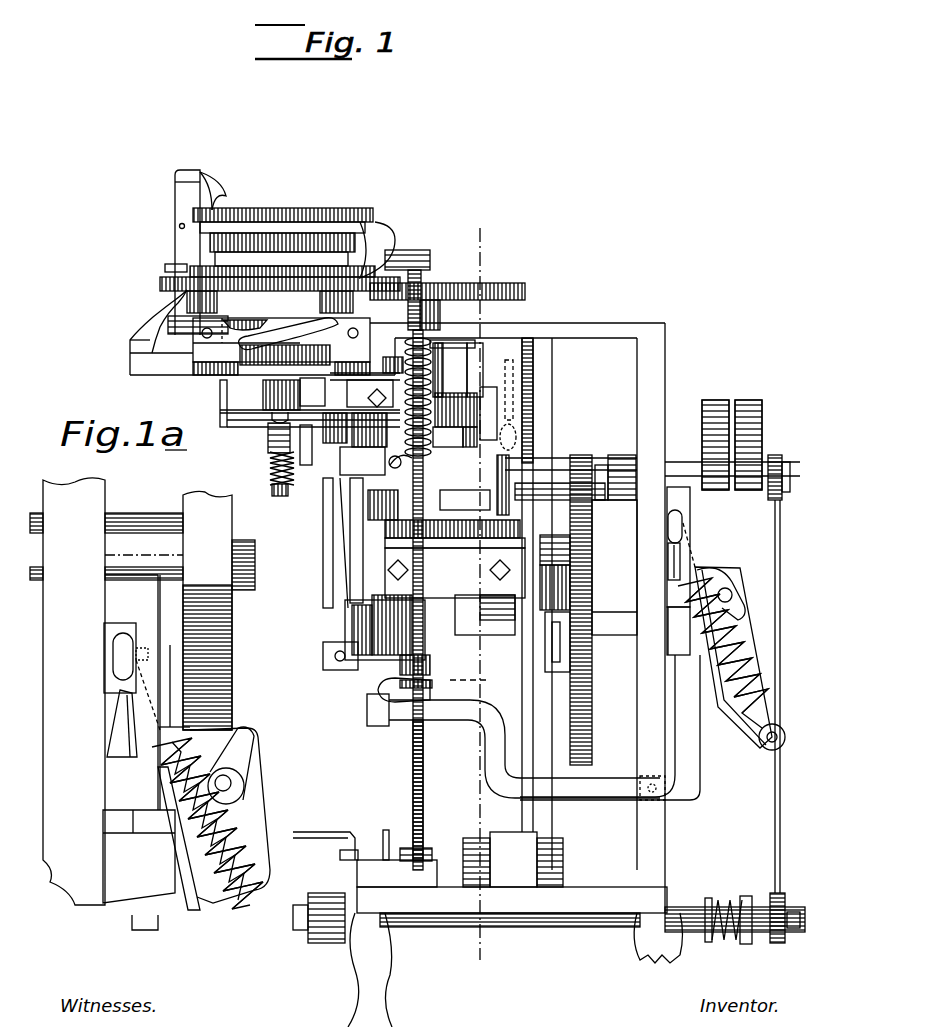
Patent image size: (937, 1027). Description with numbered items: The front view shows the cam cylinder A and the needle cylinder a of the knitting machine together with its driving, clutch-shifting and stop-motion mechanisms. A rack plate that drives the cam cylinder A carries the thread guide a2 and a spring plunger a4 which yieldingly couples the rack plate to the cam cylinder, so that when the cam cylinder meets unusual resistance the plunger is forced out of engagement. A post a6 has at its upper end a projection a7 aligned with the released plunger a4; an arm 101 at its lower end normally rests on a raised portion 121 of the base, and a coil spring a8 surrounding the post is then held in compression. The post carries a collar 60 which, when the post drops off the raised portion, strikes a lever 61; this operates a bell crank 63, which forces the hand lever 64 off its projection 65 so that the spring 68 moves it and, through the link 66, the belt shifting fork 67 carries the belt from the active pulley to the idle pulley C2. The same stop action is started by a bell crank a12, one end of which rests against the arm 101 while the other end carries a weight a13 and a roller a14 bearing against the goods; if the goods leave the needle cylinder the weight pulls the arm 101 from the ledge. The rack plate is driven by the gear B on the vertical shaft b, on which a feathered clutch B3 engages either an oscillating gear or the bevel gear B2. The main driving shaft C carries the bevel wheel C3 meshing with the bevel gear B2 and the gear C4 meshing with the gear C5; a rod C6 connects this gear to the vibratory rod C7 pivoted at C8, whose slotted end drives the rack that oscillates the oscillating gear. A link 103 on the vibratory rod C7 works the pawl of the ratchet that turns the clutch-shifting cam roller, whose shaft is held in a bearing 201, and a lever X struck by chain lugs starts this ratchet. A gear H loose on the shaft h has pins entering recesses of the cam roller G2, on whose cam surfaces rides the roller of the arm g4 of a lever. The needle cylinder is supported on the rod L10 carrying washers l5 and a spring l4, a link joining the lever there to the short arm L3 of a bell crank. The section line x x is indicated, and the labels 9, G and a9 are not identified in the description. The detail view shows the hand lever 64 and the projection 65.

In FIG. 1, the thread guide a2 is at (232, 182).
In FIG. 1, the needle cylinder a is at (350, 256).
In FIG. 1, the spring plunger a4 is at (170, 265).
In FIG. 1, the cam cylinder A is at (180, 284).
In FIG. 1, the projection a7 is at (405, 262).
In FIG. 1, the post a6 is at (432, 298).
In FIG. 1, the gear B is at (493, 290).
In FIG. 1, the lever X is at (463, 583).
In FIG. 1, the coil spring a8 is at (430, 350).
In FIG. 1, the lever 9 is at (258, 350).
In FIG. 1, the slide G is at (320, 352).
In FIG. 1, the cam roller G2 is at (400, 358).
In FIG. 1, the vertical shaft b is at (455, 372).
In FIG. 1, the bevel wheel C3 is at (520, 470).
In FIG. 1, the gear C4 is at (590, 445).
In FIG. 1, the main driving shaft C is at (608, 460).
In FIG. 1, the idle pulley C2 is at (752, 400).
In FIG. 1, the clutch B3 is at (560, 492).
In FIG. 1, the gear C5 is at (592, 575).
In FIG. 1, the link 103 is at (560, 542).
In FIG. 1, the vibratory rod C7 is at (535, 600).
In FIG. 1, the rod C6 is at (555, 622).
In FIG. 1, the hand lever 64 is at (670, 522).
In FIG. 1A, the hand lever 64 is at (118, 656).
In FIG. 1, the projection 65 is at (672, 558).
In FIG. 1A, the projection 65 is at (125, 700).
In FIG. 1, the link 66 is at (733, 588).
In FIG. 1A, the link 66 is at (222, 763).
In FIG. 1, the belt shifting fork 67 is at (742, 607).
In FIG. 1A, the belt shifting fork 67 is at (258, 790).
In FIG. 1, the spring 68 is at (755, 656).
In FIG. 1A, the spring 68 is at (185, 835).
In FIG. 1, the bell crank 63 is at (367, 712).
In FIG. 1A, the bell crank 63 is at (158, 918).
In FIG. 1, the bevel gear B2 is at (535, 532).
In FIG. 1, the collar 60 is at (410, 660).
In FIG. 1, the short arm L3 is at (323, 655).
In FIG. 1, the section line x is at (360, 670).
In FIG. 1, the lever 61 is at (435, 680).
In FIG. 1, the bearing 201 is at (484, 678).
In FIG. 1, the arm 101 is at (425, 850).
In FIG. 1, the projecting arm g4 is at (312, 391).
In FIG. 1, the shaft h is at (365, 390).
In FIG. 1, the rod L10 is at (265, 425).
In FIG. 1, the spring l4 is at (270, 466).
In FIG. 1, the washers l5 is at (272, 490).
In FIG. 1, the gear H is at (345, 462).
In FIG. 1, the raised portion of base 121 is at (397, 867).
In FIG. 1, the pivot C8 is at (560, 848).
In FIG. 1, the roller a14 is at (333, 820).
In FIG. 1, the weight a13 is at (368, 845).
In FIG. 1, the bell crank a12 is at (342, 855).
In FIG. 1, the bolt a9 is at (318, 910).